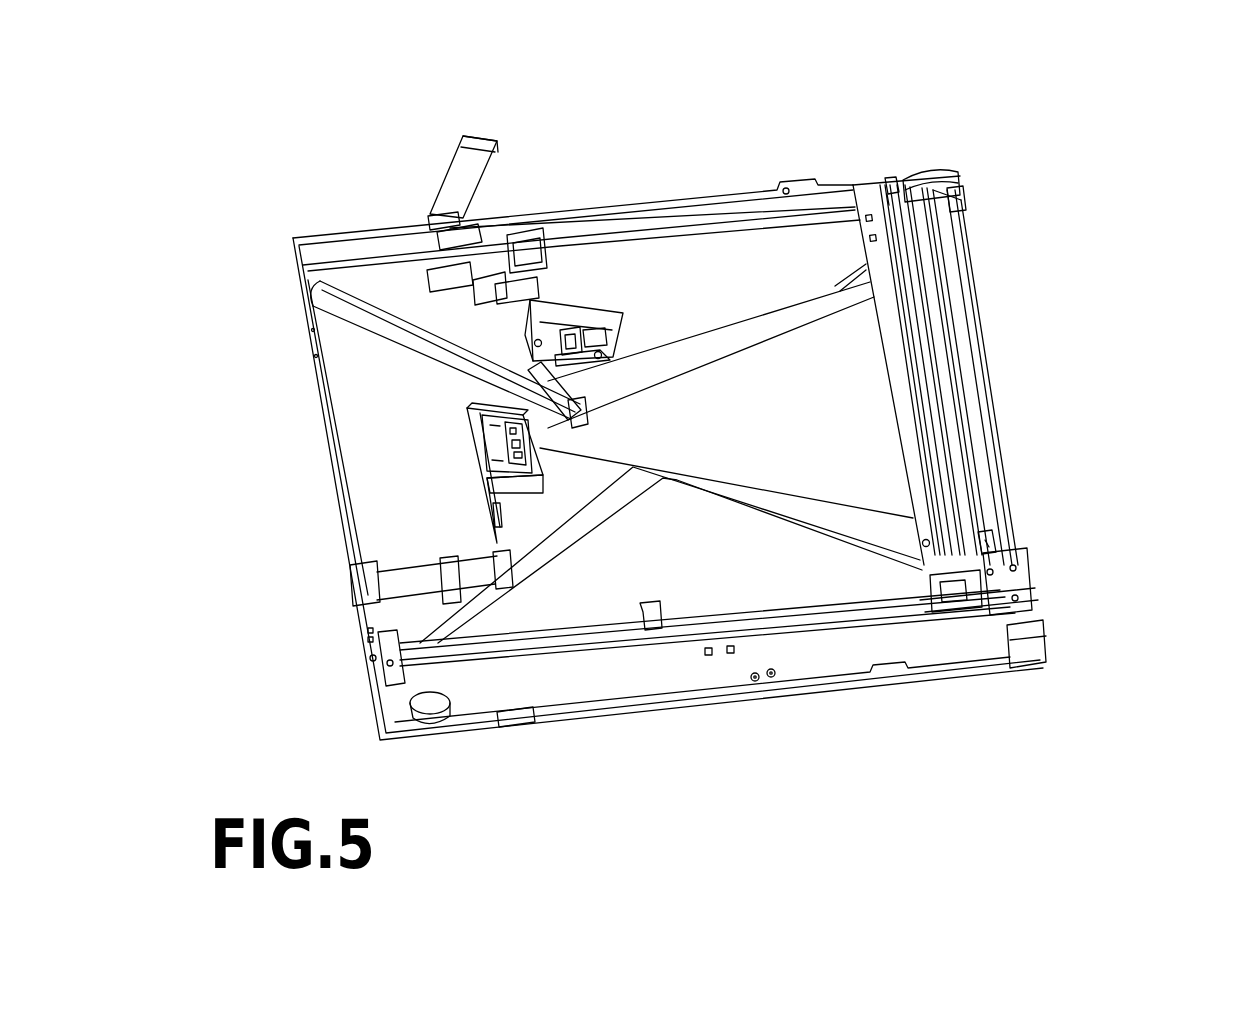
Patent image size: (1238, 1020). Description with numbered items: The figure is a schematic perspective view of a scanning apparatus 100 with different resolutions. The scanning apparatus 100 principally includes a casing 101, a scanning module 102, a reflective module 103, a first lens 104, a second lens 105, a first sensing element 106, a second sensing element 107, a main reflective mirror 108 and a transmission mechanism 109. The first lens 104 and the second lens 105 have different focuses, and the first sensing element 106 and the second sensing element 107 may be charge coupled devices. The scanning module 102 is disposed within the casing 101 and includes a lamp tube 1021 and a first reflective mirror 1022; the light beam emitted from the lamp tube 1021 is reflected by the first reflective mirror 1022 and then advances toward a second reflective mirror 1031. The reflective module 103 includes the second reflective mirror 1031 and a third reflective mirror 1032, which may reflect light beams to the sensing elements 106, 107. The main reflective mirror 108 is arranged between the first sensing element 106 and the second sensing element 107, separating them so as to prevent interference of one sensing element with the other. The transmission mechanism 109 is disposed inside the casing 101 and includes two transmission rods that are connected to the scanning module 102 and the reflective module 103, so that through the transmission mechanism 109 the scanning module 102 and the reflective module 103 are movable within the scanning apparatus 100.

The scanning apparatus 100 is at (245, 178).
The casing 101 is at (423, 503).
The scanning module 102 is at (878, 262).
The lamp tube 1021 is at (891, 178).
The first reflective mirror 1022 is at (917, 188).
The reflective module 103 is at (1002, 580).
The second reflective mirror 1031 is at (957, 314).
The third reflective mirror 1032 is at (988, 538).
The first lens 104 is at (535, 460).
The second lens 105 is at (537, 342).
The first sensing element 106 is at (465, 428).
The second sensing element 107 is at (572, 300).
The main reflective mirror 108 is at (402, 318).
The transmission mechanism 109 is at (736, 222).